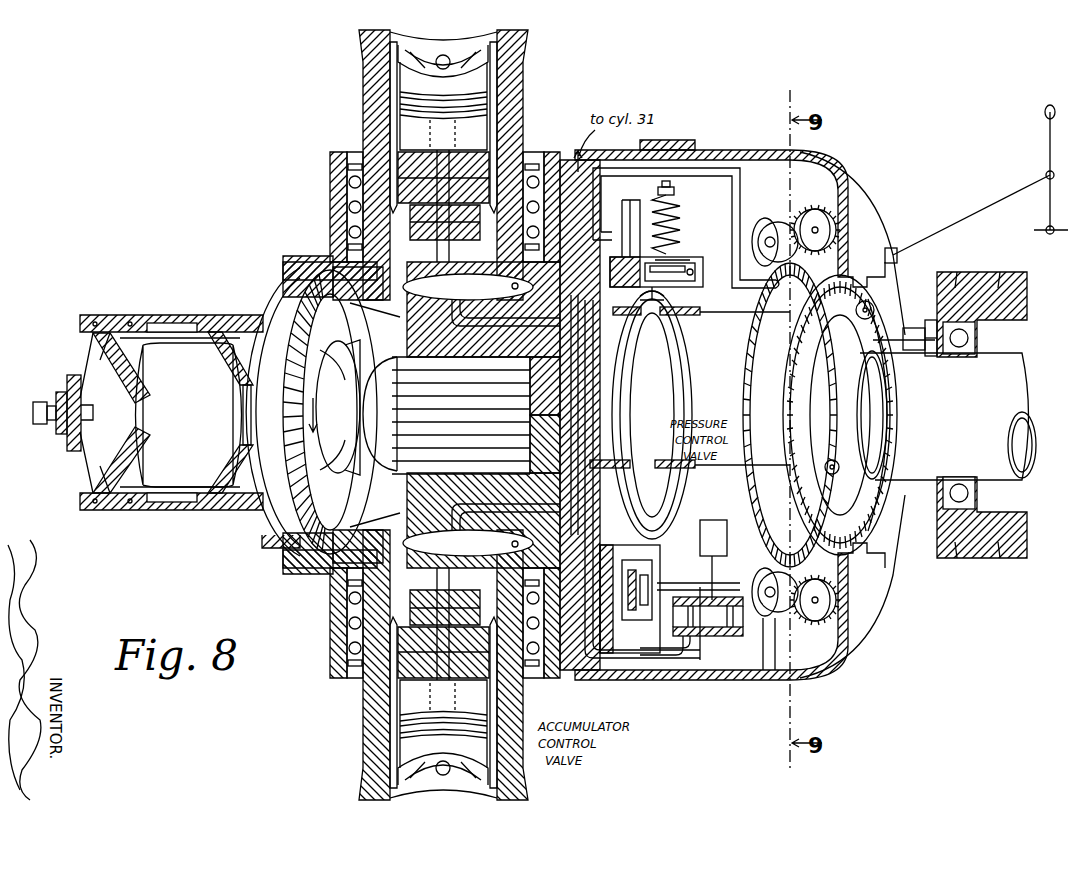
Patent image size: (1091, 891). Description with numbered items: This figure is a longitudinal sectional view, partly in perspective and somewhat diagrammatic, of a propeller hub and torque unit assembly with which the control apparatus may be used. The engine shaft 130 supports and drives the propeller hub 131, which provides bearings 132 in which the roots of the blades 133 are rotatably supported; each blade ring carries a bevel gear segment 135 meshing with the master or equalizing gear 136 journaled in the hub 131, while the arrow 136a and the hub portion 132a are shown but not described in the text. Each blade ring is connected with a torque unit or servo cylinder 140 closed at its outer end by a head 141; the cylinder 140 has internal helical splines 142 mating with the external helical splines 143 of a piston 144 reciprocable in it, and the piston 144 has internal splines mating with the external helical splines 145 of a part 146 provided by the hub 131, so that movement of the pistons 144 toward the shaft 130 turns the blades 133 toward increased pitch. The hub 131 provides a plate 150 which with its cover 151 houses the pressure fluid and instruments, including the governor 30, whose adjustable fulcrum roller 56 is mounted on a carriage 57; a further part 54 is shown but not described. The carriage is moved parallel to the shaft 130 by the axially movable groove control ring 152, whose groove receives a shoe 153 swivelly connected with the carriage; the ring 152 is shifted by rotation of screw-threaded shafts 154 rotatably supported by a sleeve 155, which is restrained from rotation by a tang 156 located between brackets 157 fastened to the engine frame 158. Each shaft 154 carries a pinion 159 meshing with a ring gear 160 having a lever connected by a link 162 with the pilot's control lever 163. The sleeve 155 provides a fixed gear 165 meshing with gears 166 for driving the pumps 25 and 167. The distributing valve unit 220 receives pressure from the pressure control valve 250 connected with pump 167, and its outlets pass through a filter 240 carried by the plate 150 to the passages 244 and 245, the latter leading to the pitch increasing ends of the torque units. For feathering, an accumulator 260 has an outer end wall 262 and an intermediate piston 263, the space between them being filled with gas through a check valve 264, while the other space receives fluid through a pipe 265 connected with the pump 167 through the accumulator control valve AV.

The blades 133 is at (372, 60).
The torque unit or servo cylinder 140 is at (500, 63).
The head 141 is at (335, 779).
The piston 144 is at (487, 100).
The external helical splines 143 is at (495, 118).
The external helical splines 145 is at (477, 153).
The part 146 is at (505, 185).
The propeller hub 131 is at (330, 162).
The bearings 132 is at (348, 207).
The internal helical splines 142 is at (397, 218).
The bevel gear segment 135 is at (285, 262).
The master or equalizing gear 136 is at (300, 300).
The ring gear rotation direction 136a is at (331, 415).
The hub cap 132a is at (400, 414).
The passage 244 is at (700, 716).
The pitch increasing passage 245 is at (572, 385).
The pipe 265 is at (545, 490).
The filter 240 is at (267, 477).
The accumulator 260 is at (166, 500).
The intermediate piston 263 is at (183, 323).
The outer end wall 262 is at (87, 373).
The check valve 264 is at (33, 413).
The cover 151 is at (710, 148).
The pump 25 is at (763, 218).
The plate 150 is at (596, 187).
The governor 30 is at (700, 199).
The carriage 57 is at (677, 250).
The valve arm 54 is at (676, 262).
The adjustable fulcrum roller 56 is at (692, 271).
The shoe 153 is at (676, 299).
The screw-threaded shafts 154 is at (690, 378).
The groove control ring 152 is at (690, 331).
The pressure control valve 250 is at (714, 528).
The distributing valve unit 220 is at (700, 660).
The accumulator control valve AV is at (627, 645).
The pump 167 is at (772, 633).
The gears 166 is at (822, 208).
The fixed gear 165 is at (758, 372).
The ring gear 160 is at (870, 300).
The pinion 159 is at (860, 320).
The tang 156 is at (920, 352).
The brackets 157 is at (935, 350).
The engine frame 158 is at (982, 401).
The sleeve 155 is at (862, 424).
The engine shaft 130 is at (993, 408).
The link 162 is at (1003, 205).
The pilot's control lever 163 is at (1051, 146).